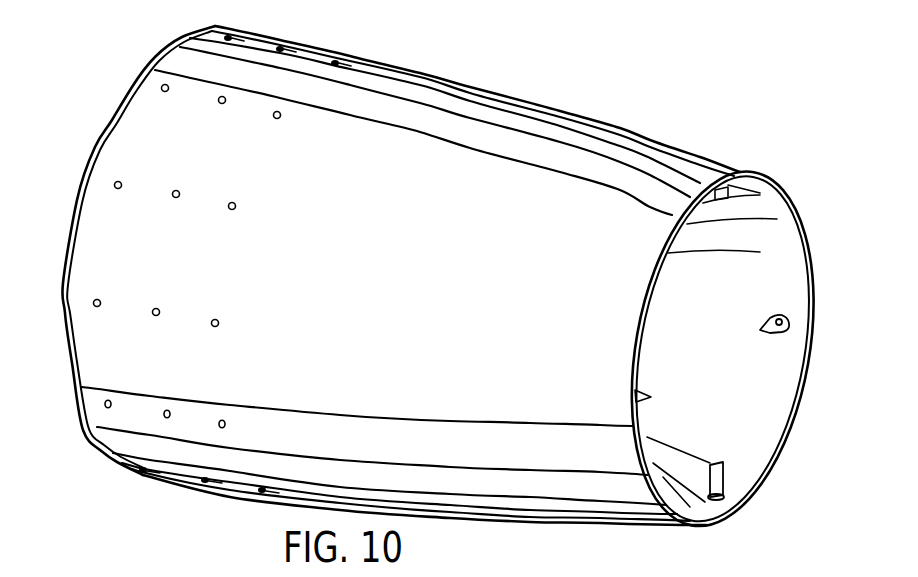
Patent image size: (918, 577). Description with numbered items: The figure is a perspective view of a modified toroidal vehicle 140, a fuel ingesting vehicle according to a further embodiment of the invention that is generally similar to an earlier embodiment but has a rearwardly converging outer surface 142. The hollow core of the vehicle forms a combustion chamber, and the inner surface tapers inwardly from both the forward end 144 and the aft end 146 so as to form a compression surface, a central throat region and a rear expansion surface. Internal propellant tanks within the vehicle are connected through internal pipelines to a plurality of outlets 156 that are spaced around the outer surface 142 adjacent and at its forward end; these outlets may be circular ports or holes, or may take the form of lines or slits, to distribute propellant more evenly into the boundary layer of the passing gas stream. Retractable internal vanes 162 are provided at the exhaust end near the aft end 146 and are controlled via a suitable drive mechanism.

The modified toroidal vehicle 140 is at (443, 282).
The outer surface 142 is at (647, 138).
The forward end 144 is at (88, 163).
The aft end 146 is at (800, 400).
The outlets 156 is at (222, 104).
The retractable internal vanes 162 is at (770, 318).